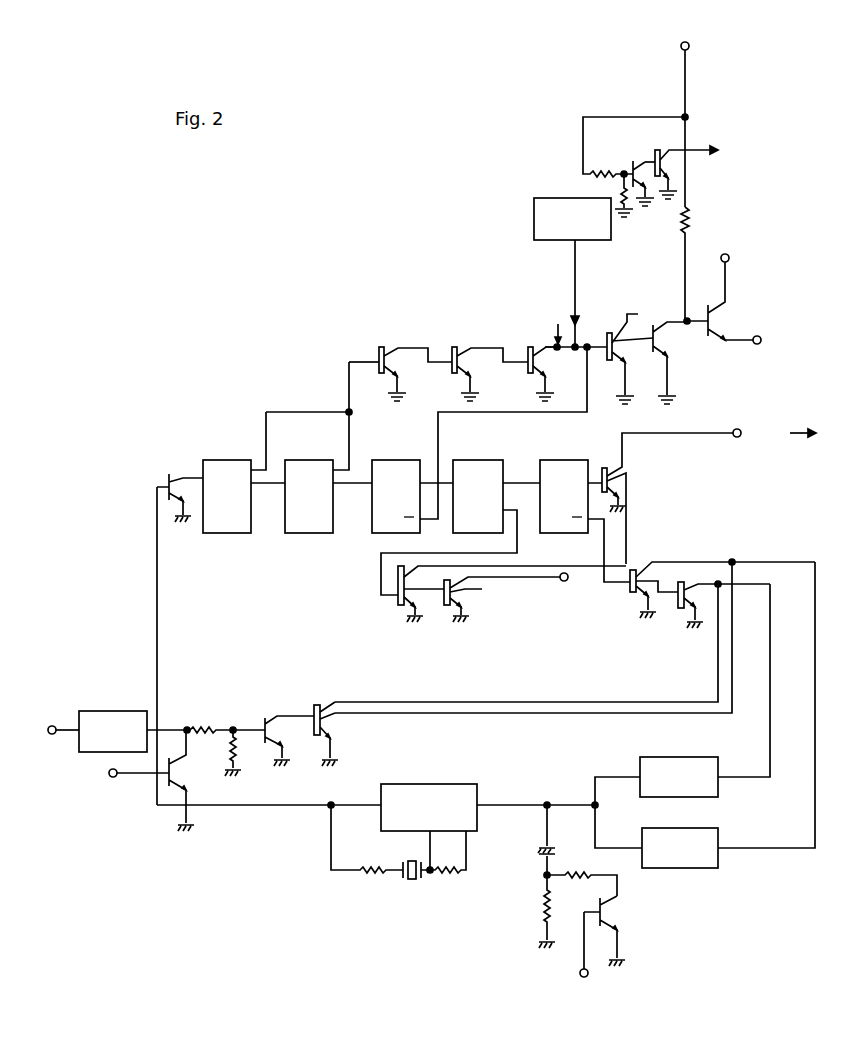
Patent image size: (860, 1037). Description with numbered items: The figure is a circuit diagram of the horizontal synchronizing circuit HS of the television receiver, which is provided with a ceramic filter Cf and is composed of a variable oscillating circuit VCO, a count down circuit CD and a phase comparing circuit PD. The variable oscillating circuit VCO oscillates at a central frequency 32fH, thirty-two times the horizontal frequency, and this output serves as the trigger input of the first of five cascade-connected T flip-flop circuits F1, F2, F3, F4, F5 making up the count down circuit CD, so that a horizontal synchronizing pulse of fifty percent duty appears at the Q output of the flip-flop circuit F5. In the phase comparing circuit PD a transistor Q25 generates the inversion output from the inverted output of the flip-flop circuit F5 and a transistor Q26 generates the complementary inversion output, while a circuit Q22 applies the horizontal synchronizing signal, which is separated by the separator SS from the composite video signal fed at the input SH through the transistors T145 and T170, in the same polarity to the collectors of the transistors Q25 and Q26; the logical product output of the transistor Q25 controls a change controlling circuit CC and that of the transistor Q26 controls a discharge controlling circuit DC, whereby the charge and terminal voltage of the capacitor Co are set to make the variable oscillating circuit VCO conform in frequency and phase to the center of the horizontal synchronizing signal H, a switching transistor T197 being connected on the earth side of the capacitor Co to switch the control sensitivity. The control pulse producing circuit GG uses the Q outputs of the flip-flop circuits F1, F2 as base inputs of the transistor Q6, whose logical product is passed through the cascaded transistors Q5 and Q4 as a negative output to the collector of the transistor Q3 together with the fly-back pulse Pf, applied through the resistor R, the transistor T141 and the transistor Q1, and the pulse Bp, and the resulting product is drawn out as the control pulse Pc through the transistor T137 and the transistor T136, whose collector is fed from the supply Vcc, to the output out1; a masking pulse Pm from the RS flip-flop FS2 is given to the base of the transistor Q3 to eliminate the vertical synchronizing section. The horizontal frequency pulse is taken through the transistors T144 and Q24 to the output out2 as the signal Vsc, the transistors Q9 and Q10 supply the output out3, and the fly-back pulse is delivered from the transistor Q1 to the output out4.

The fly-back pulse Pf is at (678, 110).
The resistor R is at (693, 264).
The transistor T141 is at (634, 167).
The transistor Q1 is at (681, 159).
The fly-back pulse output out4 is at (745, 150).
The RS flip-flop FS2 is at (572, 219).
The masking pulse Pm is at (589, 295).
The pulse signal Bp is at (555, 324).
The count down circuit CD is at (488, 429).
The control pulse producing circuit GG is at (501, 317).
The transistor Q3 is at (624, 333).
The transistor T137 is at (684, 361).
The transistor T136 is at (730, 303).
The supply voltage Vcc is at (733, 247).
The control signal output out1 is at (785, 340).
The control pulse Pc is at (762, 360).
The transistor Q6 is at (400, 362).
The transistor Q5 is at (490, 362).
The transistor Q4 is at (544, 362).
The T flip-flop circuit F1 is at (227, 496).
The T flip-flop circuit F2 is at (309, 496).
The T flip-flop circuit F3 is at (396, 496).
The T flip-flop circuit F4 is at (478, 496).
The T flip-flop circuit F5 is at (564, 496).
The transistor T144 is at (172, 485).
The transistor Q24 is at (614, 485).
The horizontal synchronizing signal H is at (710, 421).
The horizontal frequency pulse output out2 is at (774, 434).
The output signal Vsc is at (810, 458).
The transistor Q9 is at (410, 606).
The transistor Q10 is at (466, 606).
The output terminal out3 is at (568, 588).
The horizontal synchronizing circuit HS is at (466, 664).
The transistor Q25 is at (640, 598).
The transistor Q26 is at (690, 586).
The phase comparing circuit PD is at (673, 664).
The horizontal synchronizing signal input SH is at (49, 731).
The synchronizing separator SS is at (113, 731).
The transistor T145 is at (270, 718).
The transistor T170 is at (159, 780).
The circuit Q22 is at (334, 725).
The variable oscillating circuit VCO is at (429, 807).
The central frequency 32fH is at (398, 839).
The ceramic filter Cf is at (413, 880).
The capacitor Co is at (538, 854).
The switching transistor T197 is at (608, 924).
The discharge controlling circuit DC is at (656, 781).
The change controlling circuit CC is at (656, 836).